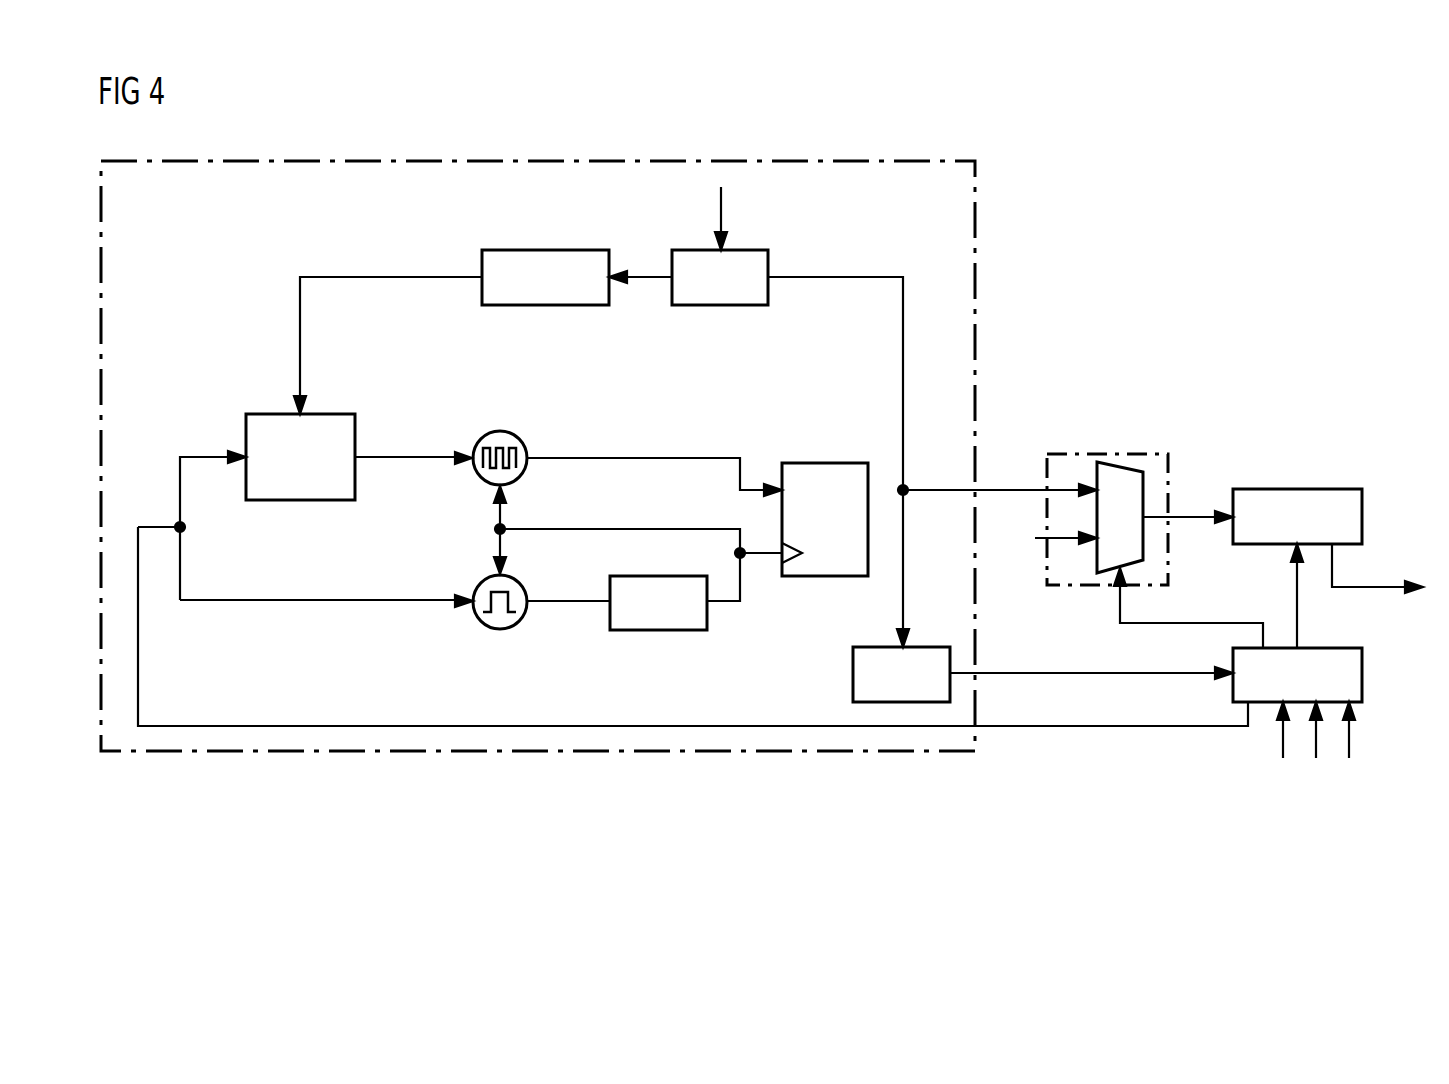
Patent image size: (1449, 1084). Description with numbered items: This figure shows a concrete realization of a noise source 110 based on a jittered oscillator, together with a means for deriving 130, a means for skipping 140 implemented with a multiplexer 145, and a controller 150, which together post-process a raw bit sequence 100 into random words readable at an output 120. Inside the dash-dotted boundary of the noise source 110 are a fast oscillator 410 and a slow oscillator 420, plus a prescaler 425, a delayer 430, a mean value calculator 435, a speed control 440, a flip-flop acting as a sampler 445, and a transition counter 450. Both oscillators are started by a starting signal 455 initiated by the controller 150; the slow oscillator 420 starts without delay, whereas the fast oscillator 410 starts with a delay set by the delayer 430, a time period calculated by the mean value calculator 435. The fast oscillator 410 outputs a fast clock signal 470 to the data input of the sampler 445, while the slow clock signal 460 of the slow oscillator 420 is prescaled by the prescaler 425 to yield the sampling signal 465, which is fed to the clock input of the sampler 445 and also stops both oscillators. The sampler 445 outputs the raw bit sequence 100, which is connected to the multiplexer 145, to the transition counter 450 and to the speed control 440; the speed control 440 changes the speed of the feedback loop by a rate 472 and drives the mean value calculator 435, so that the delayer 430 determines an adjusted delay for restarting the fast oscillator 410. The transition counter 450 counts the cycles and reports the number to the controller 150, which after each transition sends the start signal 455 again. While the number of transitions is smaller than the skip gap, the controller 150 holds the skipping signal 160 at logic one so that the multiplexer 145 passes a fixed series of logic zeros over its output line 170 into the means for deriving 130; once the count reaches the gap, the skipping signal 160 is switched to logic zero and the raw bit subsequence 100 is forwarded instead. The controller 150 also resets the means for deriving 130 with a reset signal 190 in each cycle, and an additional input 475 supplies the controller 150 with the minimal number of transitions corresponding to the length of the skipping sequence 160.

The raw bit sequence 100 is at (998, 490).
The noise source 110 is at (407, 160).
The output 120 is at (1382, 587).
The means for deriving 130 is at (1312, 489).
The means for skipping 140 is at (1085, 585).
The multiplexer 145 is at (1120, 462).
The controller 150 is at (1362, 675).
The skipping signal 160 is at (1190, 623).
The multiplexer output signal 170 is at (1190, 517).
The reset signal 190 is at (1297, 608).
The fast oscillator 410 is at (500, 430).
The slow oscillator 420 is at (500, 630).
The prescaler 425 is at (657, 630).
The delayer 430 is at (330, 414).
The mean value calculator 435 is at (538, 250).
The speed control 440 is at (752, 250).
The sampler 445 is at (822, 463).
The transition counter 450 is at (853, 675).
The starting signal 455 is at (138, 657).
The slow clock signal 460 is at (577, 601).
The sampling signal 465 is at (740, 592).
The fast clock signal 470 is at (582, 458).
The rate 472 is at (720, 205).
The additional input 475 is at (1316, 755).